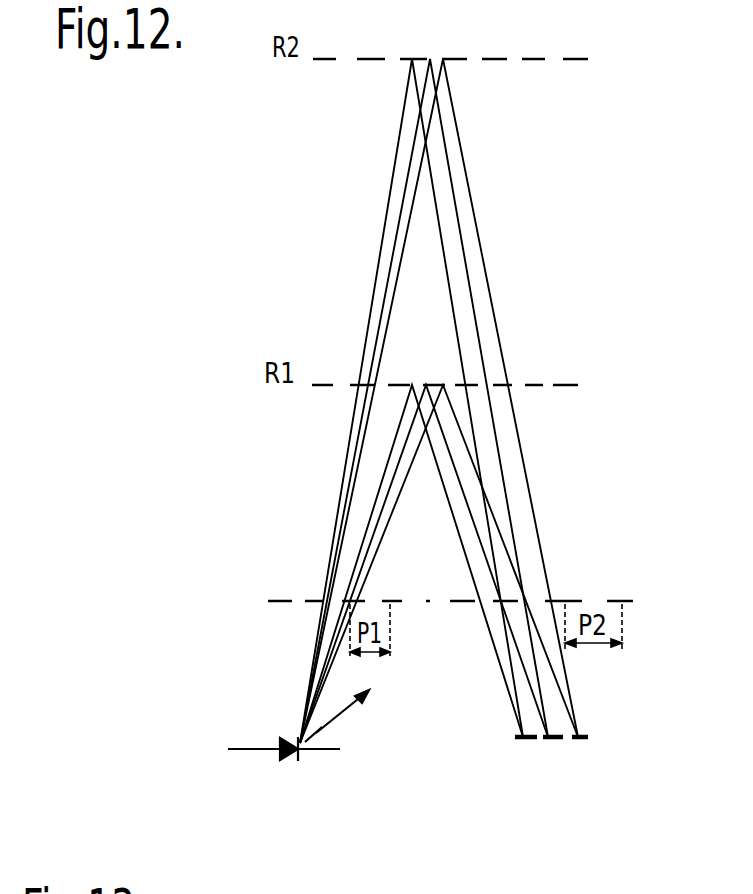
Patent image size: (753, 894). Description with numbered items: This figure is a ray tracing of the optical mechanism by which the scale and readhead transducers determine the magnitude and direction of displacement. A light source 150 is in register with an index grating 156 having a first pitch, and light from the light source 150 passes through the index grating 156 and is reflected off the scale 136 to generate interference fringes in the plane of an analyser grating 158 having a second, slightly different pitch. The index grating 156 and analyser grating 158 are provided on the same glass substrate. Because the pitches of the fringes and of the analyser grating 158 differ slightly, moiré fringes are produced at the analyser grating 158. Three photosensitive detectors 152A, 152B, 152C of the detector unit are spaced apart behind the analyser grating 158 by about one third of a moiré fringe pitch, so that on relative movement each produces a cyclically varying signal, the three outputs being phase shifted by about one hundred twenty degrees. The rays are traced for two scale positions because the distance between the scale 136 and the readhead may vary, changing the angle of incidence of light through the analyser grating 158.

The scale 136 is at (578, 385).
The light source 150 is at (335, 752).
The photosensitive detector 152A is at (521, 741).
The photosensitive detector 152B is at (557, 741).
The photosensitive detector 152C is at (584, 736).
The index grating 156 is at (288, 600).
The analyser grating 158 is at (622, 601).